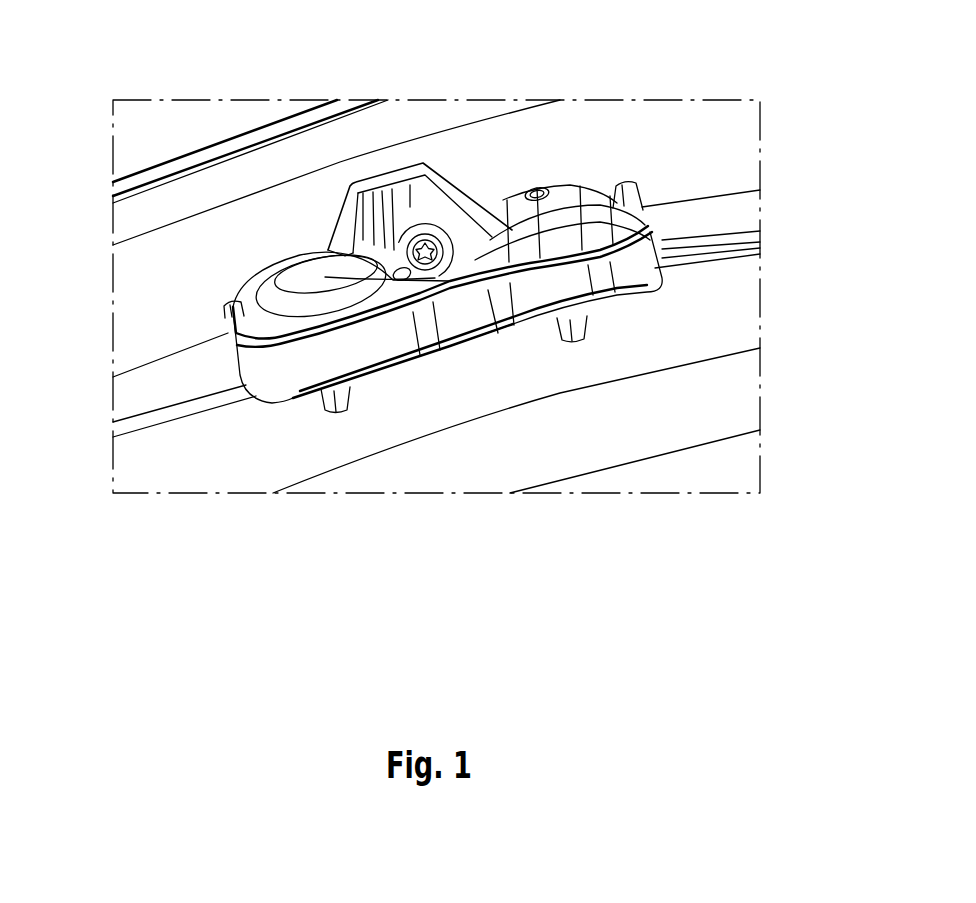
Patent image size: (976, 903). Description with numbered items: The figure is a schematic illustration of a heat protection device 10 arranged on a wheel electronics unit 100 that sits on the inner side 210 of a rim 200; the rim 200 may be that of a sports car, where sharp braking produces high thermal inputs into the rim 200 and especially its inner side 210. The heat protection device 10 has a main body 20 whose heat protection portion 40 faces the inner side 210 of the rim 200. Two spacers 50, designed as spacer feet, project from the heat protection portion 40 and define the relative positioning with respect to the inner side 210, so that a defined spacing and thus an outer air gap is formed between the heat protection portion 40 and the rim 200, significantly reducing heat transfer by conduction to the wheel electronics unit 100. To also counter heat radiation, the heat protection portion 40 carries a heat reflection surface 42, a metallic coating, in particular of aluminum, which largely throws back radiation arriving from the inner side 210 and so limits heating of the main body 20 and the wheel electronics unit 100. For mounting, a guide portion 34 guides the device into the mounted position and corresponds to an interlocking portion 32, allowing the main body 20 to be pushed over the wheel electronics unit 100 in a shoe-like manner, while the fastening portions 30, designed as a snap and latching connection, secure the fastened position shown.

The heat protection device 10 is at (168, 349).
The main body 20 is at (627, 278).
The fastening portions 30 is at (232, 306).
The interlocking portion 32 is at (233, 343).
The guide portion 34 is at (237, 360).
The heat protection portion 40 is at (300, 400).
The heat reflection surface 42 is at (464, 353).
The spacers 50 is at (337, 403).
The wheel electronics unit 100 is at (507, 225).
The rim 200 is at (717, 388).
The inner side 210 is at (727, 458).